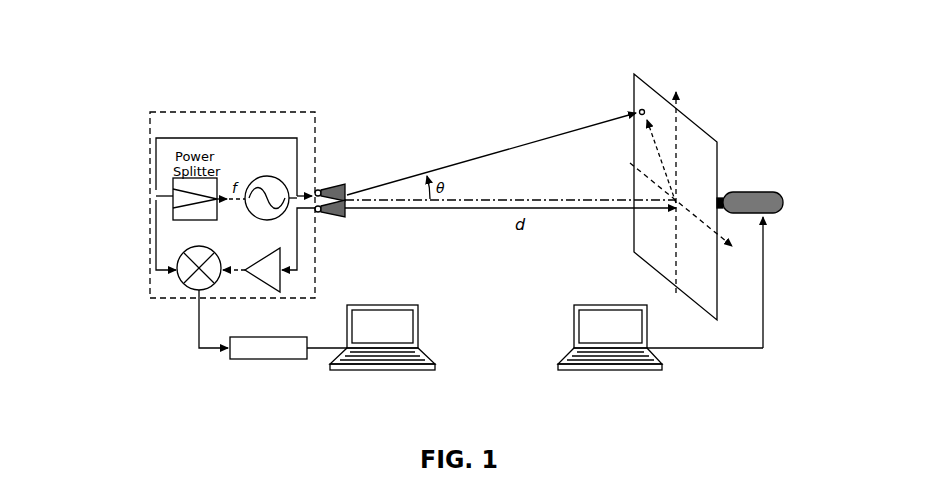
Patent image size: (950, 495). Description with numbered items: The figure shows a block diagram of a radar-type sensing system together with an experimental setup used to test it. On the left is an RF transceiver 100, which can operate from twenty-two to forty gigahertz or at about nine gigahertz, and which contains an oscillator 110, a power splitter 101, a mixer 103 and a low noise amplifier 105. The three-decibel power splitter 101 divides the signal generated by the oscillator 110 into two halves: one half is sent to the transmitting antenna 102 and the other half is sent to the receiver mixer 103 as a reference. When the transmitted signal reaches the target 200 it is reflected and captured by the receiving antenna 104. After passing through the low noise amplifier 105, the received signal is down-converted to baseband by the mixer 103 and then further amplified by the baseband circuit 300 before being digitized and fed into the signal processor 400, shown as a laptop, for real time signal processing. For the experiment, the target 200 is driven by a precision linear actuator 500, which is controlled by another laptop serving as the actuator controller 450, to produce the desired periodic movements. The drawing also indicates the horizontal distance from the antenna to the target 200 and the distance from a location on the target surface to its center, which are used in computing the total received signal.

The RF transceiver 100 is at (208, 100).
The power splitter 101 is at (167, 195).
The transmitting antenna 102 is at (332, 179).
The mixer 103 is at (170, 265).
The receiving antenna 104 is at (322, 212).
The low noise amplifier 105 is at (248, 260).
The oscillator 110 is at (275, 178).
The target 200 is at (673, 132).
The baseband circuit 300 is at (256, 360).
The signal processor 400 is at (375, 312).
The actuator controller 450 is at (598, 322).
The actuator 500 is at (760, 205).